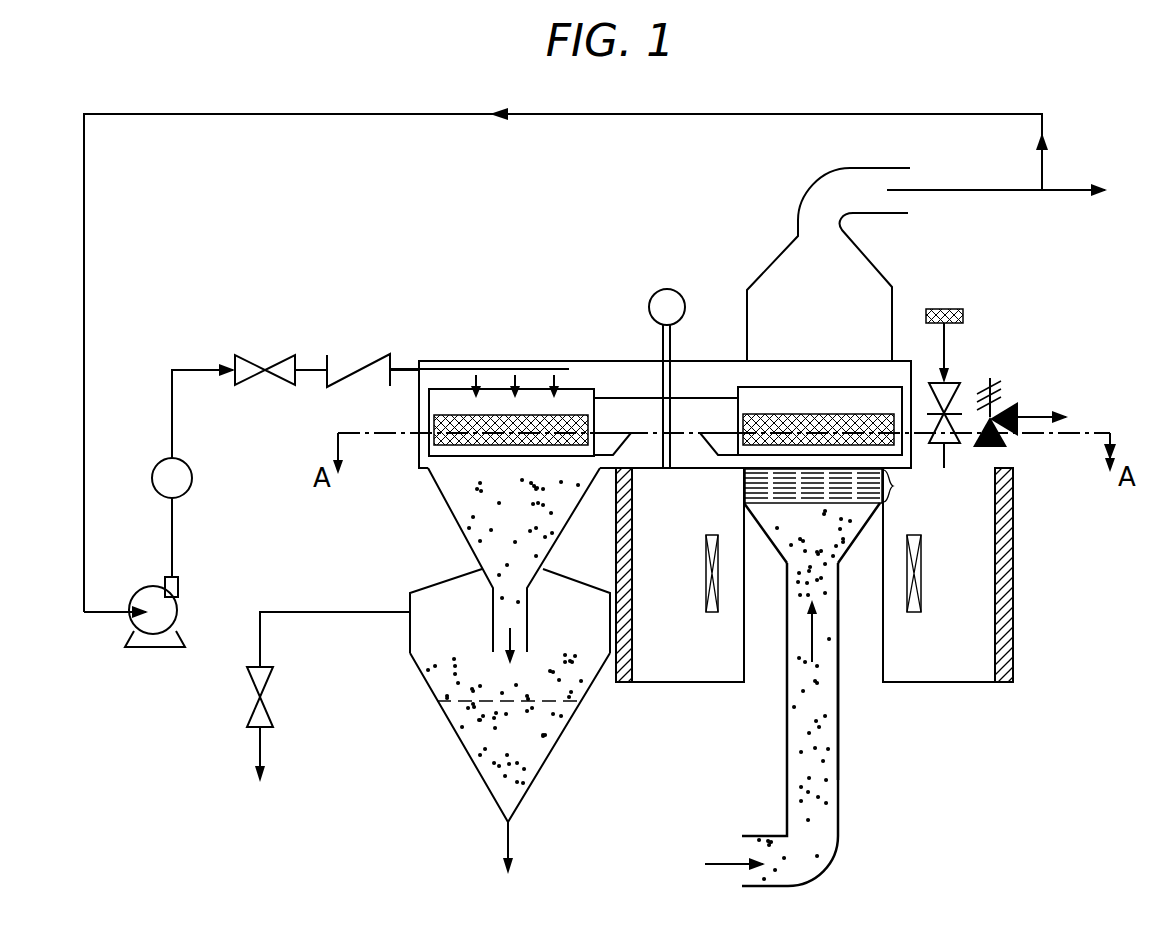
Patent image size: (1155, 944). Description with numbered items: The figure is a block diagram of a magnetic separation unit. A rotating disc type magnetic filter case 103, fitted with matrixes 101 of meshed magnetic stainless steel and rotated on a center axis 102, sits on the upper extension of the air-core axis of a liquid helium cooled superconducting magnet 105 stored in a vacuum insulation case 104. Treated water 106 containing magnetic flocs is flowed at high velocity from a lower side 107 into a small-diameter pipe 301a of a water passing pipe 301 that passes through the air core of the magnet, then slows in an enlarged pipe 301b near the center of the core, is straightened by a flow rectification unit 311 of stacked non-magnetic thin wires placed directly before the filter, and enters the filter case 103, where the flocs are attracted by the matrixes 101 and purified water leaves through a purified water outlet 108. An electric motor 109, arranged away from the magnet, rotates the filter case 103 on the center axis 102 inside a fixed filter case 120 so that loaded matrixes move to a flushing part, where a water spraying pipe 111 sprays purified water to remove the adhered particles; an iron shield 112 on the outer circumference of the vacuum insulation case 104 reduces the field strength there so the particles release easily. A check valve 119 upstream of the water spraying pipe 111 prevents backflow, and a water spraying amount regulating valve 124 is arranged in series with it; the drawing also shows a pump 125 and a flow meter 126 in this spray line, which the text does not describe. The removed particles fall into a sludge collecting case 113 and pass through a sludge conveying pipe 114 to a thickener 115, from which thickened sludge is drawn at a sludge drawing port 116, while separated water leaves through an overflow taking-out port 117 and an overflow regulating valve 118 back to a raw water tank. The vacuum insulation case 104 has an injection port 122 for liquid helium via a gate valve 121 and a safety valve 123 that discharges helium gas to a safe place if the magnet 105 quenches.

The matrixes 101 is at (460, 458).
The center axis 102 is at (660, 395).
The rotating disc type magnetic filter case 103 is at (586, 386).
The vacuum insulation case 104 is at (1000, 683).
The superconducting magnet 105 is at (912, 612).
The treated water 106 is at (815, 753).
The lower side 107 is at (723, 864).
The purified water outlet 108 is at (946, 190).
The electric motor 109 is at (666, 289).
The water spraying pipe 111 is at (450, 361).
The iron shield 112 is at (1013, 628).
The sludge collecting case 113 is at (452, 512).
The sludge conveying pipe 114 is at (497, 632).
The thickener 115 is at (587, 692).
The sludge drawing port 116 is at (508, 838).
The overflow taking-out port 117 is at (357, 613).
The overflow regulating valve 118 is at (246, 702).
The check valve 119 is at (356, 362).
The fixed filter case 120 is at (714, 358).
The gate valve 121 is at (960, 382).
The injection port 122 is at (945, 309).
The safety valve 123 is at (1018, 412).
The water spraying amount regulating valve 124 is at (273, 363).
The pump 125 is at (180, 582).
The flow meter 126 is at (153, 470).
The water passing pipe 301 is at (787, 680).
The small-diameter pipe 301a is at (838, 627).
The enlarged pipe 301b is at (857, 545).
The flow rectification unit 311 is at (897, 488).